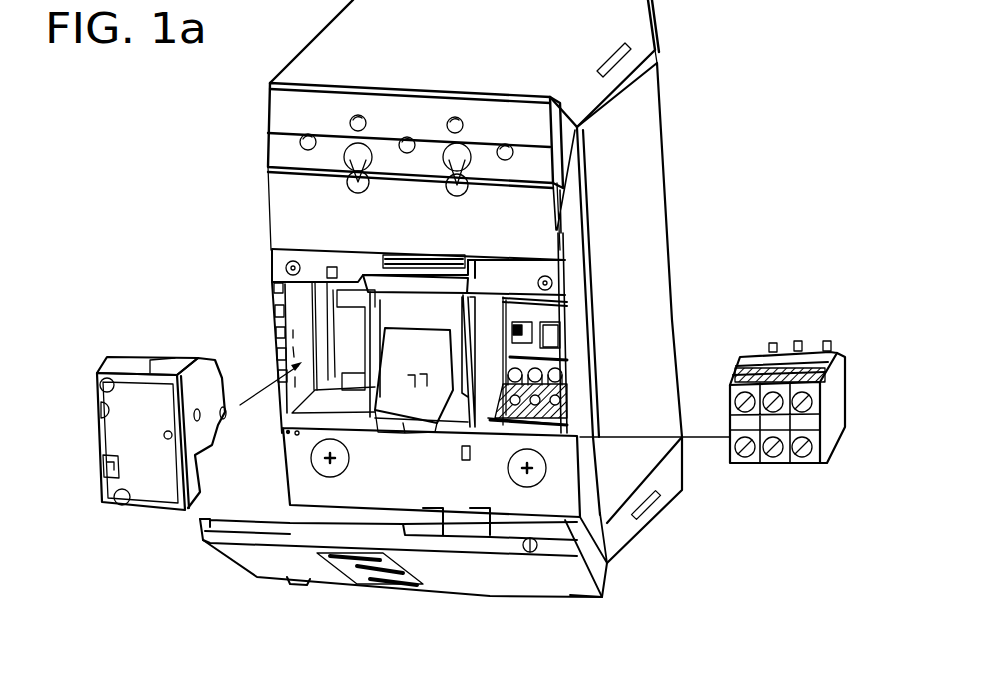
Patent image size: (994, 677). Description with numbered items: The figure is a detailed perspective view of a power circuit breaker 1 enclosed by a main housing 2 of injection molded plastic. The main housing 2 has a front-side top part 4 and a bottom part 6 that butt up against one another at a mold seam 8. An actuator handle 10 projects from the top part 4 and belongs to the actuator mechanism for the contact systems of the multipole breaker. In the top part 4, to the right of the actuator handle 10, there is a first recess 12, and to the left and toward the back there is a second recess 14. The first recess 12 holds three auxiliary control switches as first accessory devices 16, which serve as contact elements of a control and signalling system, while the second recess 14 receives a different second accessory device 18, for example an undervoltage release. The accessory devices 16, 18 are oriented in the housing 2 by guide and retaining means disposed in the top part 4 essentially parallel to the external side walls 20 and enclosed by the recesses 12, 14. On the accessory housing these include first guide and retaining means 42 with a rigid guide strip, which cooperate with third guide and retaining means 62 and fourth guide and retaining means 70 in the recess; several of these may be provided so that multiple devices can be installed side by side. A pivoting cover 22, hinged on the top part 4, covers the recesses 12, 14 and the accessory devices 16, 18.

The power circuit breaker 1 is at (136, 255).
The main housing 2 is at (192, 202).
The top part 4 is at (297, 212).
The bottom part 6 is at (667, 139).
The mold seam 8 is at (580, 193).
The actuator handle 10 is at (407, 410).
The first recess 12 is at (538, 320).
The second recess 14 is at (332, 310).
The first accessory devices 16 is at (787, 464).
The second accessory device 18 is at (157, 365).
The external side walls 20 is at (650, 268).
The pivoting cover 22 is at (560, 593).
The first guide and retaining means 42 is at (827, 345).
The third guide and retaining means 62 is at (558, 303).
The fourth guide and retaining means 70 is at (499, 368).